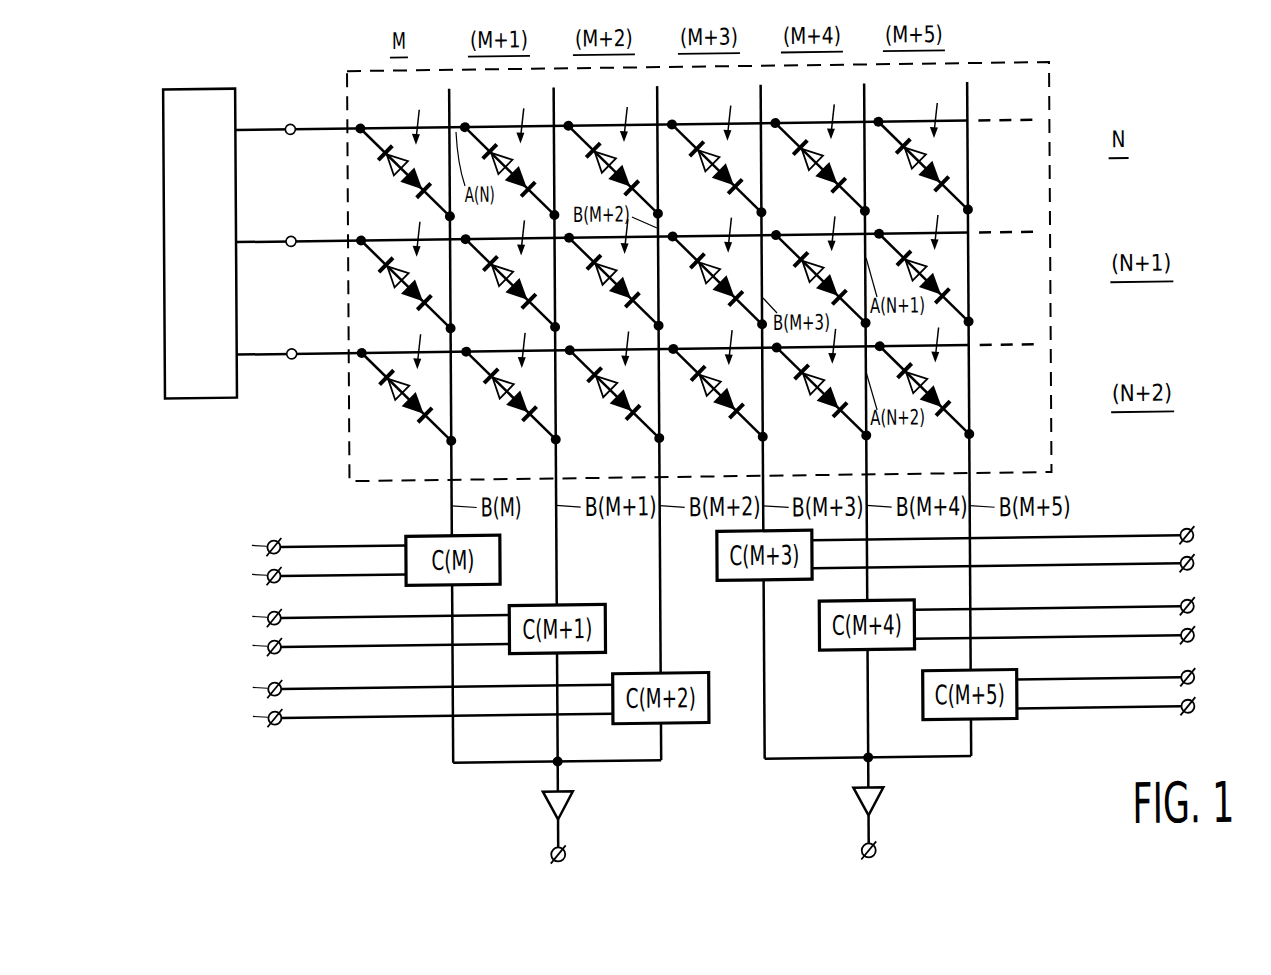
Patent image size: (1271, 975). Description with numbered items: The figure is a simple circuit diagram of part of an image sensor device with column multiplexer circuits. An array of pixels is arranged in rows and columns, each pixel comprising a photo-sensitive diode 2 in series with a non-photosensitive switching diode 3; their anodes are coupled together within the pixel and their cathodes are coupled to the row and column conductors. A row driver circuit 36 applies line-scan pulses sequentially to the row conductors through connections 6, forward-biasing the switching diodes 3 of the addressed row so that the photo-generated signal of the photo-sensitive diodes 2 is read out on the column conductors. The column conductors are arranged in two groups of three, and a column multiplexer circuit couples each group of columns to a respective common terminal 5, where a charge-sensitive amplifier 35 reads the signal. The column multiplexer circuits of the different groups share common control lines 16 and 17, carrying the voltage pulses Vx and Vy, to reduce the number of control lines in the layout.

The photo-sensitive diode 2 is at (381, 163).
The non-photosensitive switching diode 3 is at (407, 190).
The common terminal 5 is at (712, 776).
The connection 6 is at (639, 212).
The common control line 16 is at (305, 544).
The common control line 17 is at (360, 574).
The charge-sensitive amplifier 35 is at (546, 812).
The row driver circuit 36 is at (207, 400).